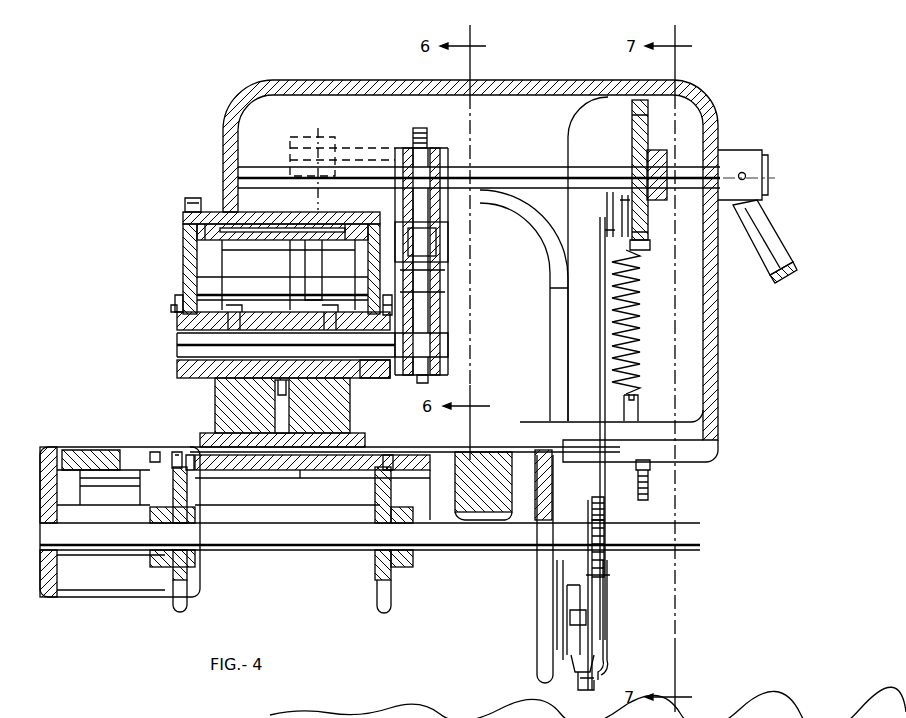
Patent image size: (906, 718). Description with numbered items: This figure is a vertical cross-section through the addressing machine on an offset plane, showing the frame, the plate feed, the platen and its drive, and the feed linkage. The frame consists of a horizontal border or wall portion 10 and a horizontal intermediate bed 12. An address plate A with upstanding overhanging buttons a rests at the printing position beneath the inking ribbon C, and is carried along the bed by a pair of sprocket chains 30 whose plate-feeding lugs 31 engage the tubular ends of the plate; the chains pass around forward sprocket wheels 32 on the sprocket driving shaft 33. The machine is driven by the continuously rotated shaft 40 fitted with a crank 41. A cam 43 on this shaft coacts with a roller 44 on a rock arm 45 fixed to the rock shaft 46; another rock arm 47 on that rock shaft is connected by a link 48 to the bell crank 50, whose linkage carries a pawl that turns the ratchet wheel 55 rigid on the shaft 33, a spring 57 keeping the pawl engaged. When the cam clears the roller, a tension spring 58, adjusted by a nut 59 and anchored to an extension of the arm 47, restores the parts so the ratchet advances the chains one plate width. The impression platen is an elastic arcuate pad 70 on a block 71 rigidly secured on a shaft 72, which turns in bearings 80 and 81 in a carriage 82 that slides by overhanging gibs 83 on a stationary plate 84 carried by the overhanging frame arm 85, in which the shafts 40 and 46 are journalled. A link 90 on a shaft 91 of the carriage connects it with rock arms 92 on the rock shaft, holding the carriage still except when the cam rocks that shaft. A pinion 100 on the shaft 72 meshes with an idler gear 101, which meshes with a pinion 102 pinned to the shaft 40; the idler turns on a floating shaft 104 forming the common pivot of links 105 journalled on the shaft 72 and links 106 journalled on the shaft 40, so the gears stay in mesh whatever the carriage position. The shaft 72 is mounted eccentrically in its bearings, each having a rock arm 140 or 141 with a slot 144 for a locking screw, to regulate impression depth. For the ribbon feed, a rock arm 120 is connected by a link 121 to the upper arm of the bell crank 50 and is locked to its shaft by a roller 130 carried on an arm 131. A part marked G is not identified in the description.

The border or wall portion 10 is at (64, 456).
The intermediate bed 12 is at (263, 470).
The sprocket chains 30 is at (175, 452).
The plate-feeding lugs 31 is at (190, 470).
The forward sprocket wheels 32 is at (188, 584).
The sprocket driving shaft 33 is at (370, 535).
The continuously rotated shaft 40 is at (510, 169).
The crank 41 is at (790, 262).
The cam 43 is at (649, 127).
The roller 44 is at (648, 237).
The rock arm 45 is at (621, 213).
The rock shaft 46 is at (583, 156).
The rock arm 47 is at (606, 196).
The link 48 is at (600, 341).
The bell crank 50 is at (598, 582).
The ratchet wheel 55 is at (605, 533).
The spring 57 is at (605, 512).
The tension spring 58 is at (641, 320).
The nut 59 is at (651, 483).
The elastic arcuate pad 70 is at (365, 438).
The block 71 is at (216, 392).
The shaft 72 is at (286, 345).
The bearing 80 is at (177, 328).
The bearing 81 is at (366, 378).
The carriage 82 is at (183, 242).
The overhanging gibs 83 is at (204, 198).
The stationary plate 84 is at (280, 217).
The overhanging frame arm 85 is at (553, 88).
The link 90 is at (322, 264).
The shaft 91 is at (264, 278).
The rock arms 92 is at (290, 249).
The pinion 100 is at (440, 326).
The idler gear 101 is at (435, 300).
The pinion 102 is at (429, 128).
The floating shaft 104 is at (440, 240).
The links 105 is at (447, 286).
The links 106 is at (395, 162).
The rock arm 120 is at (563, 612).
The link 121 is at (608, 634).
The roller 130 is at (586, 622).
The arm 131 is at (578, 608).
The rock arm 140 is at (175, 301).
The rock arm 141 is at (388, 295).
The slot 144 is at (172, 312).
The buttons a is at (196, 444).
The address plate A is at (320, 478).
The inking ribbon C is at (102, 452).
The gib G is at (156, 459).